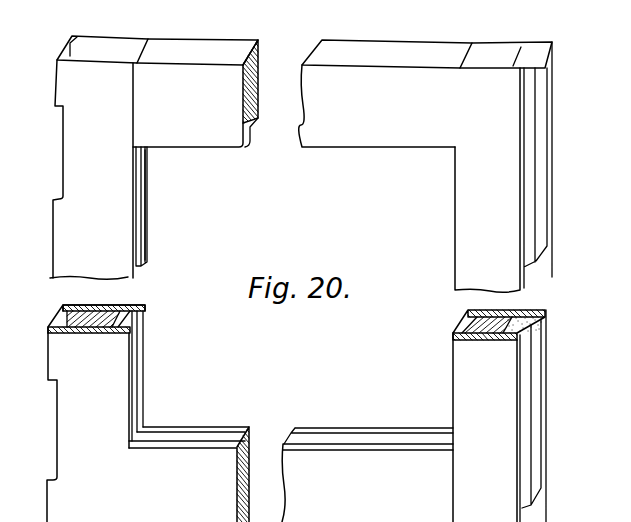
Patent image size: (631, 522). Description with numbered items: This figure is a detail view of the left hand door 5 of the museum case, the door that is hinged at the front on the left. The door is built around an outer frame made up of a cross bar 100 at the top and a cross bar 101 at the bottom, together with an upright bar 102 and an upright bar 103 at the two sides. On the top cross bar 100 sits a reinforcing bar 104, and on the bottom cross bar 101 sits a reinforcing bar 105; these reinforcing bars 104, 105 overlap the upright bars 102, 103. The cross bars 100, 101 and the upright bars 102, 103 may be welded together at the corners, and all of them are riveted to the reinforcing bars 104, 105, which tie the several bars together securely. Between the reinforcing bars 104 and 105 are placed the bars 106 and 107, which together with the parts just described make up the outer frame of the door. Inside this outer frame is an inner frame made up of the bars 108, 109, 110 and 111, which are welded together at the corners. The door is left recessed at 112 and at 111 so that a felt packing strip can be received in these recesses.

The door 5 is at (557, 124).
The cross bar 100 is at (223, 137).
The cross bar 101 is at (195, 460).
The upright bar 102 is at (117, 193).
The upright bar 103 is at (465, 211).
The reinforcing bar 104 is at (232, 55).
The reinforcing bar 105 is at (252, 455).
The bar 106 is at (143, 228).
The bar 107 is at (478, 325).
The inner frame bar 108 is at (260, 53).
The inner frame bar 109 is at (130, 39).
The inner frame bar 110 is at (248, 427).
The inner frame bar 111 is at (550, 62).
The recess 112 is at (70, 43).